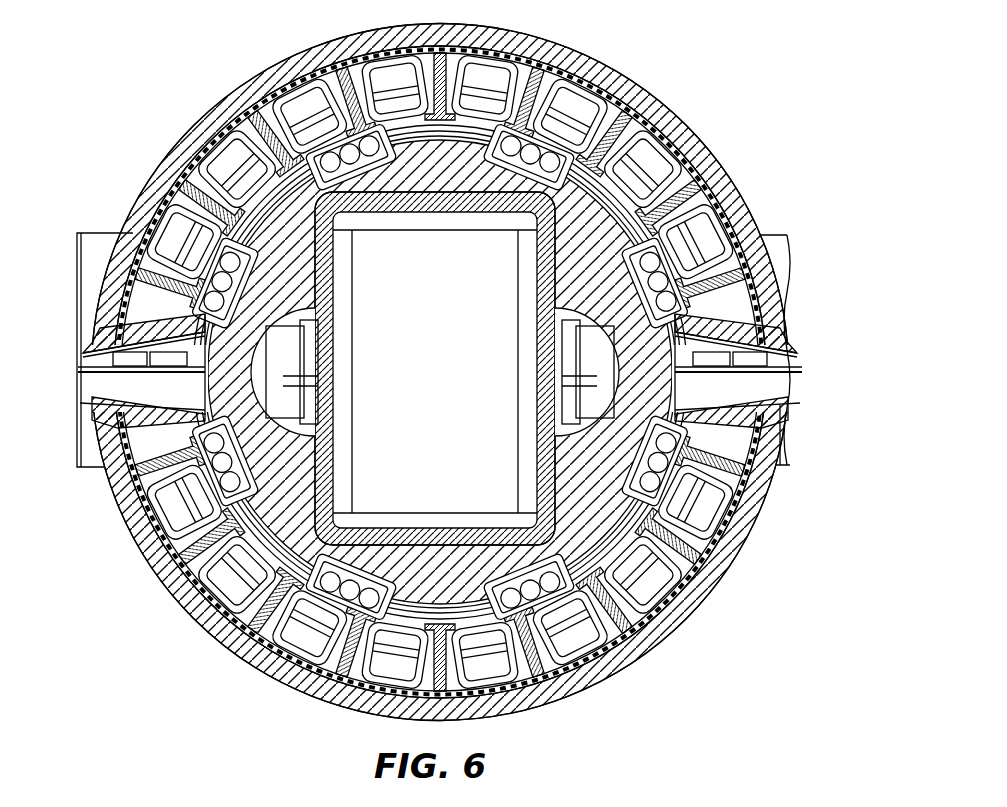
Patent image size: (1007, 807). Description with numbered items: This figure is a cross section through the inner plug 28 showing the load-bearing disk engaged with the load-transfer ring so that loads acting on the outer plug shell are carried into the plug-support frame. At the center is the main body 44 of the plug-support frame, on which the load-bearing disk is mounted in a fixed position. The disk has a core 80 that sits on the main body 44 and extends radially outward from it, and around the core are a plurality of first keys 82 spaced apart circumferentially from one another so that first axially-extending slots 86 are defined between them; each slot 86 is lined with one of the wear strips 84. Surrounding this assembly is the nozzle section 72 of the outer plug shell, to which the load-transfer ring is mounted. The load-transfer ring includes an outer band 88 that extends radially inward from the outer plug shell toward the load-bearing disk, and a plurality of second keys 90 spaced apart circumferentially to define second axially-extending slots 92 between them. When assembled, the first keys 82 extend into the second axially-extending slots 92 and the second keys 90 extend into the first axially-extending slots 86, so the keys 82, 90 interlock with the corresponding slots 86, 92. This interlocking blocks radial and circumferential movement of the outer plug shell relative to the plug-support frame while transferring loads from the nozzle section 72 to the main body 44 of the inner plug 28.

The inner plug 28 is at (478, 364).
The main body 44 is at (712, 126).
The nozzle section 72 is at (650, 120).
The core 80 is at (507, 318).
The first keys 82 is at (463, 133).
The wear strips 84 is at (665, 438).
The first axially-extending slots 86 is at (227, 258).
The outer band 88 is at (778, 448).
The second keys 90 is at (667, 440).
The second axially-extending slots 92 is at (387, 617).